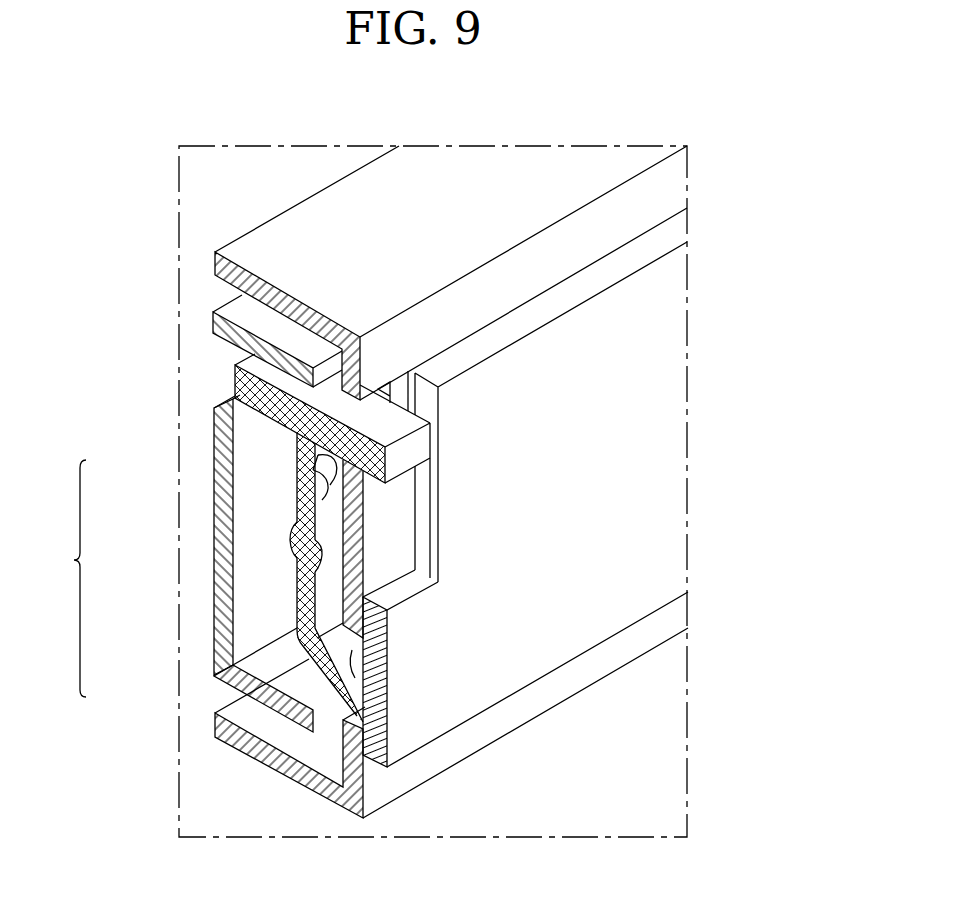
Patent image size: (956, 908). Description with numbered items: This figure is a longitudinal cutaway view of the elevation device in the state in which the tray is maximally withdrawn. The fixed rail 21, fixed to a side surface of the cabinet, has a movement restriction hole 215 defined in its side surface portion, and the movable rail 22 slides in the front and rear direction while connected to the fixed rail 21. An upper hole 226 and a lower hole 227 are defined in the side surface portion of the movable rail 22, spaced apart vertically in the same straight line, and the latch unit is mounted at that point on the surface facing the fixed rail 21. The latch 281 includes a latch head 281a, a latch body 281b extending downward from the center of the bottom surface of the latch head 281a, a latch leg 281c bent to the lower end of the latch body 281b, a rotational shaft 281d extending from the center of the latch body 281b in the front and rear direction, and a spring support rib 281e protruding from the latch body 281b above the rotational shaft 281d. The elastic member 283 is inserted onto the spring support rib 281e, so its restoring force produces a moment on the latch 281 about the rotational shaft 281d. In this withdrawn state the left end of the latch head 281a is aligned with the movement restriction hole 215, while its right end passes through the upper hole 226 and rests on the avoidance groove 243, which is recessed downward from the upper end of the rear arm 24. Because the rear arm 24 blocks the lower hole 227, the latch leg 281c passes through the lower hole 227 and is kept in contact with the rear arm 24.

The fixed rail 21 is at (213, 420).
The movement restriction hole 215 is at (222, 378).
The movable rail 22 is at (480, 197).
The upper hole 226 is at (398, 372).
The lower hole 227 is at (363, 666).
The rear arm 24 is at (637, 390).
The avoidance groove 243 is at (427, 542).
The elastic member 283 is at (357, 503).
The latch 281 is at (64, 578).
The latch head 281a is at (298, 402).
The latch body 281b is at (298, 457).
The latch leg 281c is at (322, 667).
The rotational shaft 281d is at (292, 540).
The spring support rib 281e is at (312, 483).